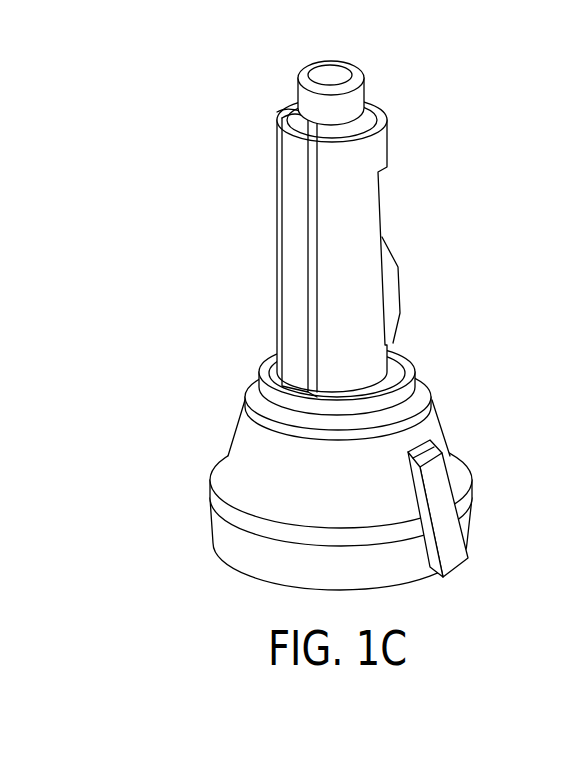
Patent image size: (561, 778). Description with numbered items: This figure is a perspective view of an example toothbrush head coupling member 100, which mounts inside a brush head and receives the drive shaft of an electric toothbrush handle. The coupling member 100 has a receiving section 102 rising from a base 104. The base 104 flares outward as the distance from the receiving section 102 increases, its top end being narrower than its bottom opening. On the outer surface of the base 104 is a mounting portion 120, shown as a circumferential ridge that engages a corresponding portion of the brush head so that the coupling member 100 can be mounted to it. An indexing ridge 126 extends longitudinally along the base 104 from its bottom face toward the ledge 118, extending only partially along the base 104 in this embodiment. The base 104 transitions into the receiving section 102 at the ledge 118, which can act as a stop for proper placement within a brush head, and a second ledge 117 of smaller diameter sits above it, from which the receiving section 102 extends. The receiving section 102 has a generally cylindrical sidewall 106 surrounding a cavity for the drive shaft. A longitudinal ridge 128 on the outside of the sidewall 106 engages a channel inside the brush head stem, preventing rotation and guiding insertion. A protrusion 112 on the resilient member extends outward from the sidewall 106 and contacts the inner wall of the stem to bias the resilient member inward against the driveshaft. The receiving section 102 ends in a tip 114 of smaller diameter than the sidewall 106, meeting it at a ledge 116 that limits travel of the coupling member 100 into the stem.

The coupling member 100 is at (333, 299).
The receiving section 102 is at (319, 209).
The base 104 is at (333, 475).
The sidewall 106 is at (372, 245).
The protrusion 112 is at (400, 295).
The tip 114 is at (333, 70).
The ledge 116 is at (372, 107).
The second ledge 117 is at (393, 353).
The ledge 118 is at (417, 388).
The mounting portion 120 is at (462, 478).
The indexing ridge 126 is at (452, 562).
The longitudinal ridge 128 is at (292, 213).